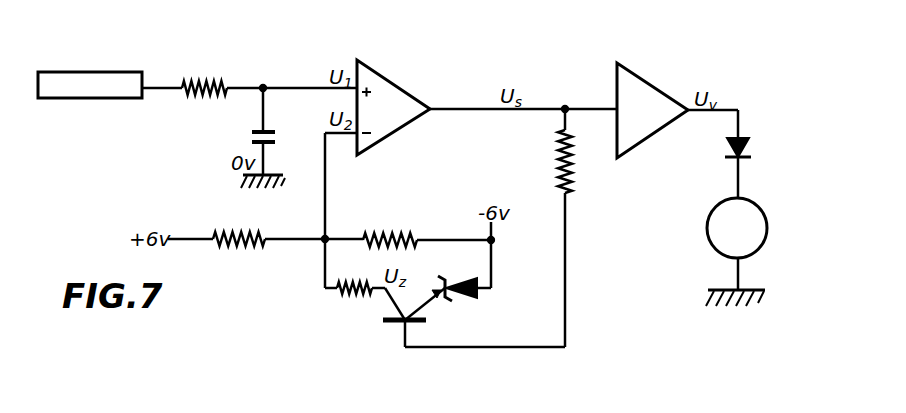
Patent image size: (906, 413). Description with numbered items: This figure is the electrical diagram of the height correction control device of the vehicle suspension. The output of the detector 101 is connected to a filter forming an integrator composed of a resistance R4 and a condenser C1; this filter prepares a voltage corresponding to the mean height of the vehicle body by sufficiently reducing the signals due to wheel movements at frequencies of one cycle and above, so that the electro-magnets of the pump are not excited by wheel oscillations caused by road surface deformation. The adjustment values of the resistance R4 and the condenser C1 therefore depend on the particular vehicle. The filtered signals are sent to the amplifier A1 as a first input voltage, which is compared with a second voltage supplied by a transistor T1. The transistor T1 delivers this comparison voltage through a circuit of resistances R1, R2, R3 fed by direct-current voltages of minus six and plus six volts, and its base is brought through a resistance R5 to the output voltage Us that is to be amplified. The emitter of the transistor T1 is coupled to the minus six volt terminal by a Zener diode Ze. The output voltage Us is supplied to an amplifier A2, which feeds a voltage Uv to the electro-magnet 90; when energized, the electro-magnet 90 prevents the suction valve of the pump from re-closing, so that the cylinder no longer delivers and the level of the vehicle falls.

The detector 101 is at (105, 92).
The electro-magnet 90 is at (707, 229).
The resistance R1 is at (239, 253).
The resistance R2 is at (390, 225).
The resistance R3 is at (354, 275).
The resistance R4 is at (204, 75).
The resistance R5 is at (581, 152).
The condenser C1 is at (274, 131).
The amplifier A1 is at (393, 107).
The amplifier A2 is at (652, 110).
The transistor T1 is at (399, 322).
The Zener diode Ze is at (457, 304).